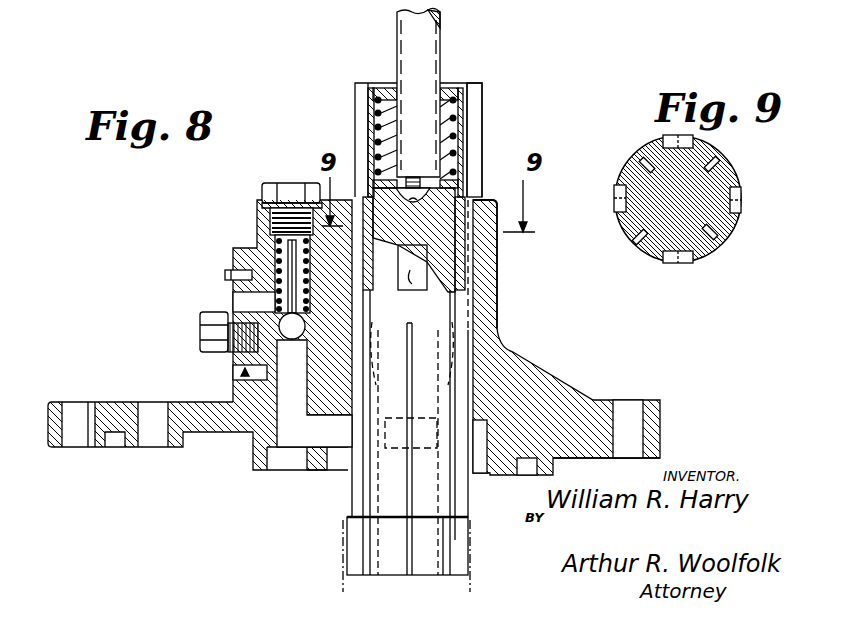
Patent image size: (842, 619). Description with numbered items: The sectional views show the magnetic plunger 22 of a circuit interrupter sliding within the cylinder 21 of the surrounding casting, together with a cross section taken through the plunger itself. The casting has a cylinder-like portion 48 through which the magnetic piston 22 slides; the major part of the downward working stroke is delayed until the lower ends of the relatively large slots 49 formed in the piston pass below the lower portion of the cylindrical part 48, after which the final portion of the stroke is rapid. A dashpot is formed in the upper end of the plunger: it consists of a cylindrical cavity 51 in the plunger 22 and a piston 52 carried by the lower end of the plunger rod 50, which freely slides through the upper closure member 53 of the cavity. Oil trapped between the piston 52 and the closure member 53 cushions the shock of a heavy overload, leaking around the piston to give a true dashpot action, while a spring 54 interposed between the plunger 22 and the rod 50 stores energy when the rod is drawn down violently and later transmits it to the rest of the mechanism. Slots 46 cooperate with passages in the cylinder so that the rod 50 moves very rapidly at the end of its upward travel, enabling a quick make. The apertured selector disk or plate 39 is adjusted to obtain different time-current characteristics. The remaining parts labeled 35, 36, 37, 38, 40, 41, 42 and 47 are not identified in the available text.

In FIG. 8, the cylinder 21 is at (470, 581).
In FIG. 8, the magnetic plunger 22 is at (433, 317).
In FIG. 9, the magnetic plunger 22 is at (722, 165).
In FIG. 8, the central passage 35 is at (412, 448).
In FIG. 8, the mounting flange 36 is at (483, 437).
In FIG. 8, the orifice 37 is at (247, 378).
In FIG. 8, the fitting nut 38 is at (228, 373).
In FIG. 8, the apertured selector disk 39 is at (228, 285).
In FIG. 8, the valve boss 40 is at (238, 250).
In FIG. 8, the port 41 is at (232, 300).
In FIG. 8, the ball valve 42 is at (294, 334).
In FIG. 8, the slots 46 is at (350, 493).
In FIG. 9, the slots 46 is at (745, 192).
In FIG. 8, the shoulder 47 is at (486, 200).
In FIG. 8, the cylinder-like portion 48 is at (492, 258).
In FIG. 8, the slots 49 is at (474, 116).
In FIG. 9, the slots 49 is at (745, 206).
In FIG. 8, the plunger rod 50 is at (405, 33).
In FIG. 8, the cylindrical cavity 51 is at (385, 118).
In FIG. 8, the piston 52 is at (462, 177).
In FIG. 8, the upper closure member 53 is at (445, 95).
In FIG. 8, the spring 54 is at (380, 133).